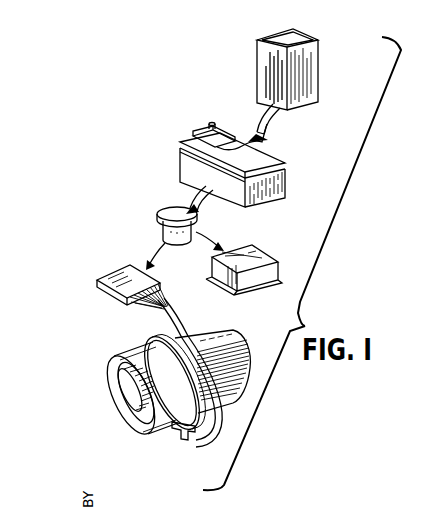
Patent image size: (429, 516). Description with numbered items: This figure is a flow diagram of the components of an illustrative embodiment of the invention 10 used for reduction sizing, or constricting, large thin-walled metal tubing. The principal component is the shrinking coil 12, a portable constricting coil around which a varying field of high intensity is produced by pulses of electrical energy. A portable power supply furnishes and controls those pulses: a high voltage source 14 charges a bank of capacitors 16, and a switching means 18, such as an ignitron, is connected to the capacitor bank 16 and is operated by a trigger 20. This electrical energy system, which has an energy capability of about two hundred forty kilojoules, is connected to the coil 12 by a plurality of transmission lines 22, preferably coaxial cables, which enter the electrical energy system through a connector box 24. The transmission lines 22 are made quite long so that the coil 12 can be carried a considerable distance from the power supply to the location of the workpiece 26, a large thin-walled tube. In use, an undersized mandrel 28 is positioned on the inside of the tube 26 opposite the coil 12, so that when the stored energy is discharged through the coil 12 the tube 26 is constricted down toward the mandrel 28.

The illustrative embodiment of the invention 10 is at (143, 119).
The shrinking coil 12 is at (166, 426).
The high voltage source 14 is at (270, 66).
The bank of capacitors 16 is at (196, 164).
The switching means 18 is at (157, 209).
The trigger 20 is at (272, 262).
The transmission lines 22 is at (175, 332).
The connector box 24 is at (98, 279).
The workpiece 26 is at (131, 353).
The undersized mandrel 28 is at (122, 384).